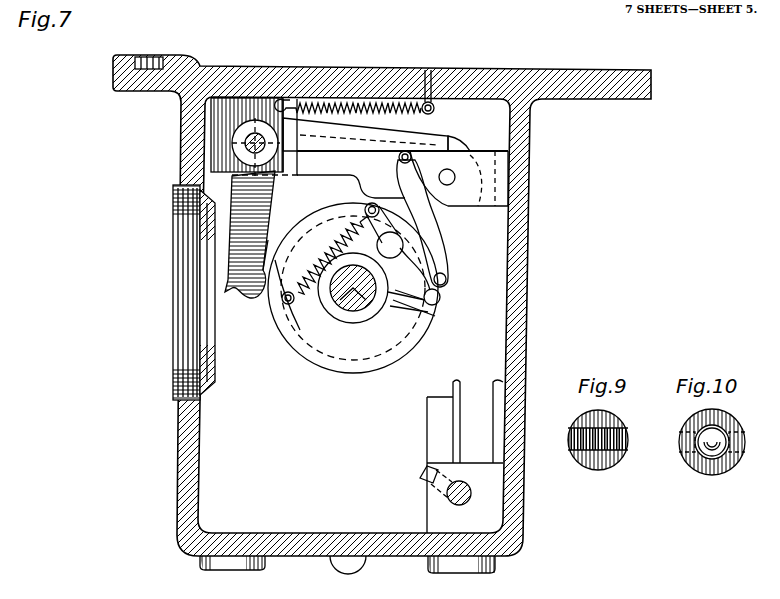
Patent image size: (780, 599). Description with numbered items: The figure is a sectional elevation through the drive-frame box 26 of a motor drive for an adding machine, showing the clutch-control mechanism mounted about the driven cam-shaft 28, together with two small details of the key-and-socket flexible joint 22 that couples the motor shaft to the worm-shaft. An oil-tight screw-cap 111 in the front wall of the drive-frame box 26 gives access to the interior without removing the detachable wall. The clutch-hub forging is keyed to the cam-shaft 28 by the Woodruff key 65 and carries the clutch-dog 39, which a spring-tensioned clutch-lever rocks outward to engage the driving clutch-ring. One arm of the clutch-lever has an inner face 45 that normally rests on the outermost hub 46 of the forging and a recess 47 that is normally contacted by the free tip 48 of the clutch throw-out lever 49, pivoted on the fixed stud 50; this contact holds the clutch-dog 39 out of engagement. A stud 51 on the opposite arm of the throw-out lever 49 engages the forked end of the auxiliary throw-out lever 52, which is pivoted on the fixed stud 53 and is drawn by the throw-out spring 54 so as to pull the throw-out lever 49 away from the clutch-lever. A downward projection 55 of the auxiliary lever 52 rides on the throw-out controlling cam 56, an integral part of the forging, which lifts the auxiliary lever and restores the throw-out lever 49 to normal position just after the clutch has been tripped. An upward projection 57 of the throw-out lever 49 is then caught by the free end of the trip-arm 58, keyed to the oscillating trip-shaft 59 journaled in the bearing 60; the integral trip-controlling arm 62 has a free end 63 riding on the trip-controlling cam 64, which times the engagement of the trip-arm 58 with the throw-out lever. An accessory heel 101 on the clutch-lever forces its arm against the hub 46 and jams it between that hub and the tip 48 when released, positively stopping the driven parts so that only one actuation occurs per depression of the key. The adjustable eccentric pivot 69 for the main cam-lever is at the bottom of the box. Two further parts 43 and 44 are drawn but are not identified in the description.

In FIG. 7, the drive-frame box 26 is at (531, 220).
In FIG. 7, the oil-tight screw-cap 111 is at (174, 252).
In FIG. 7, the fixed stud 53 is at (290, 156).
In FIG. 7, the trip-controlling arm 62 is at (246, 300).
In FIG. 7, the bearing 60 is at (228, 156).
In FIG. 7, the trip-shaft 59 is at (245, 143).
In FIG. 7, the trip-arm 58 is at (377, 121).
In FIG. 7, the throw-out spring 54 is at (366, 106).
In FIG. 7, the auxiliary throw-out lever 52 is at (402, 174).
In FIG. 7, the stud 51 is at (410, 153).
In FIG. 7, the upward projection 57 is at (459, 138).
In FIG. 7, the fixed stud 50 is at (450, 175).
In FIG. 7, the clutch throw-out lever 49 is at (429, 223).
In FIG. 7, the pin 43 is at (380, 211).
In FIG. 7, the clutch-dog 39 is at (391, 234).
In FIG. 7, the cam-shaft 28 is at (360, 305).
In FIG. 7, the throw-out controlling cam 56 is at (292, 256).
In FIG. 7, the Woodruff key 65 is at (341, 305).
In FIG. 7, the downward projection 55 is at (354, 232).
In FIG. 7, the spring eyelet 44 is at (333, 243).
In FIG. 7, the free end 63 is at (280, 308).
In FIG. 7, the trip-controlling cam 64 is at (287, 316).
In FIG. 7, the free tip 48 is at (447, 279).
In FIG. 7, the recess 47 is at (441, 297).
In FIG. 7, the accessory heel 101 is at (436, 306).
In FIG. 7, the inner face 45 is at (395, 292).
In FIG. 7, the outermost hub 46 is at (393, 300).
In FIG. 7, the adjustable eccentric pivot 69 is at (458, 505).
In FIG. 9, the key-and-socket flexible joint 22 is at (624, 431).
In FIG. 10, the key-and-socket flexible joint 22 is at (682, 432).